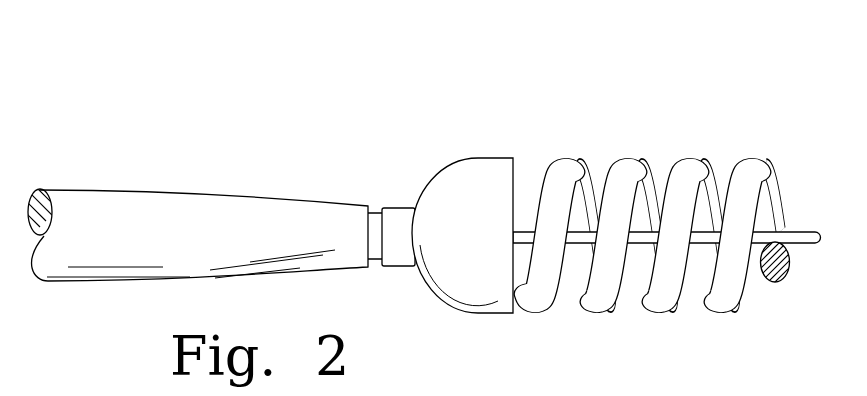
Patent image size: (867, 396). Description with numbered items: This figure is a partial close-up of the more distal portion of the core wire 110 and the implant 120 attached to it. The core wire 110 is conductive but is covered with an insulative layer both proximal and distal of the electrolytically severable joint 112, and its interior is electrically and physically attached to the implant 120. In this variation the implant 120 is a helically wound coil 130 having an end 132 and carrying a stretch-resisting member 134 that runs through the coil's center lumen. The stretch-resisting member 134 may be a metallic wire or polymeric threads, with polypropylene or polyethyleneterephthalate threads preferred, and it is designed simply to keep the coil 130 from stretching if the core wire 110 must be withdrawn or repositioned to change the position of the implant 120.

The core wire 110 is at (151, 190).
The electrolytically severable joint 112 is at (374, 207).
The implant 120 is at (672, 95).
The helically wound coil 130 is at (667, 192).
The end 132 is at (478, 184).
The stretch-resisting member 134 is at (716, 183).